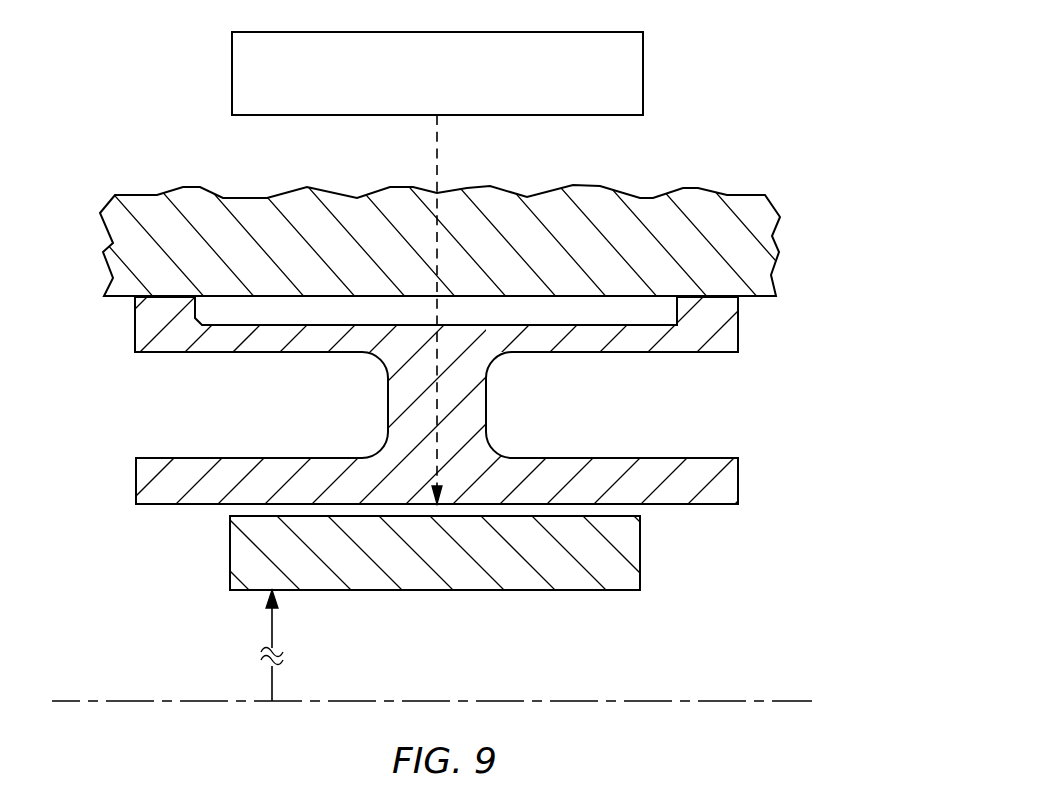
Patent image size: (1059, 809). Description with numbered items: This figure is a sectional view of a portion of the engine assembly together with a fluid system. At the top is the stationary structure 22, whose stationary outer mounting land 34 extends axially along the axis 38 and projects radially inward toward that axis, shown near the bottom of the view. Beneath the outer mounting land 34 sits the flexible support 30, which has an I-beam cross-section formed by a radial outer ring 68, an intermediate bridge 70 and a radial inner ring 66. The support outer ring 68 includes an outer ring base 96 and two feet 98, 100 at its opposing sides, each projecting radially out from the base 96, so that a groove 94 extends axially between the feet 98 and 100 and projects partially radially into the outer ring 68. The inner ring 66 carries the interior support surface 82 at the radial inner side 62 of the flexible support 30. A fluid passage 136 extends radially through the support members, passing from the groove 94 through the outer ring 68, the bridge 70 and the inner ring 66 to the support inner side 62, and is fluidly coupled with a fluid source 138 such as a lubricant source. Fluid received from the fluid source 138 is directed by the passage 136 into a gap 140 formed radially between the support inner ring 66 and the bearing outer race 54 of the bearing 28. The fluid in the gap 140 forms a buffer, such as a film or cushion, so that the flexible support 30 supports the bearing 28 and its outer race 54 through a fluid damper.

The stationary structure 22 is at (798, 183).
The bearing 28 is at (407, 605).
The flexible support 30 is at (112, 343).
The stationary outer mounting land 34 is at (777, 247).
The axis 38 is at (98, 701).
The bearing outer race 54 is at (230, 553).
The radial inner side of the flexible support 62 is at (158, 503).
The interior support surface 82 is at (158, 503).
The radial inner ring 66 is at (760, 476).
The radial outer ring 68 is at (760, 336).
The intermediate bridge 70 is at (510, 397).
The groove 94 is at (352, 313).
The outer ring base 96 is at (632, 338).
The outer ring foot 98 is at (703, 322).
The outer ring foot 100 is at (157, 318).
The fluid passage 136 is at (438, 452).
The fluid source 138 is at (643, 72).
The gap 140 is at (660, 518).